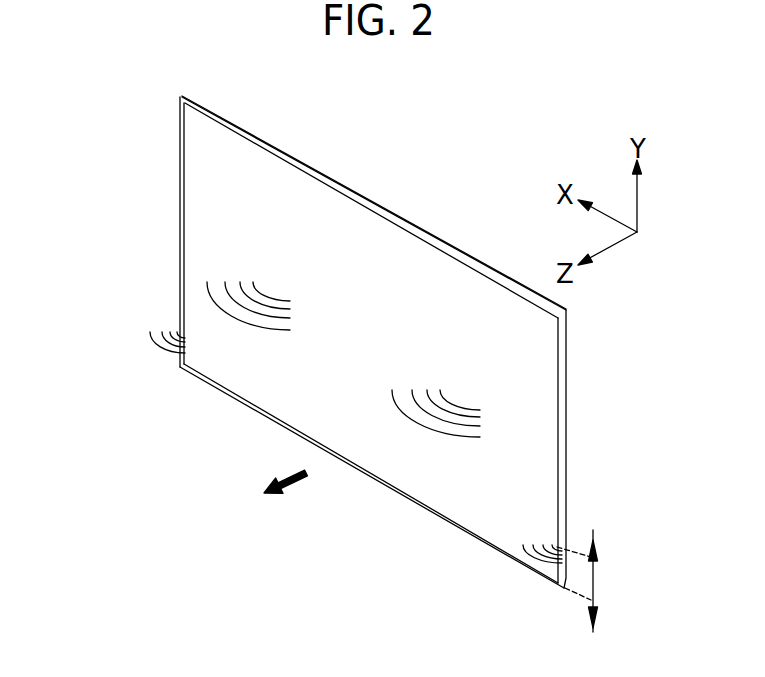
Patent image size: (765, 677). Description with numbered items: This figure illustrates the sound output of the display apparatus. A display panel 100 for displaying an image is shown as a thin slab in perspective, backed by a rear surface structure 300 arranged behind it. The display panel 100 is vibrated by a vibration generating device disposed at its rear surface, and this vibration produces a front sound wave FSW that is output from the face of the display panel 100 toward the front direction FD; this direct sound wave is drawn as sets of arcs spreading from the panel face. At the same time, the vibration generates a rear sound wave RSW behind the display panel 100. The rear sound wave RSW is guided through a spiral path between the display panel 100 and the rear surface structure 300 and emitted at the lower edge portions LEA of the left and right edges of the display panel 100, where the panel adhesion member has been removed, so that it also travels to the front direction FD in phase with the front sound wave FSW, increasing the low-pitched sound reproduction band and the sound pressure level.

The display panel 100 is at (200, 238).
The rear surface structure 300 is at (425, 233).
The front sound wave FSW is at (257, 330).
The rear sound wave RSW is at (150, 333).
The front direction FD is at (266, 497).
The lower edge portions LEA is at (600, 581).